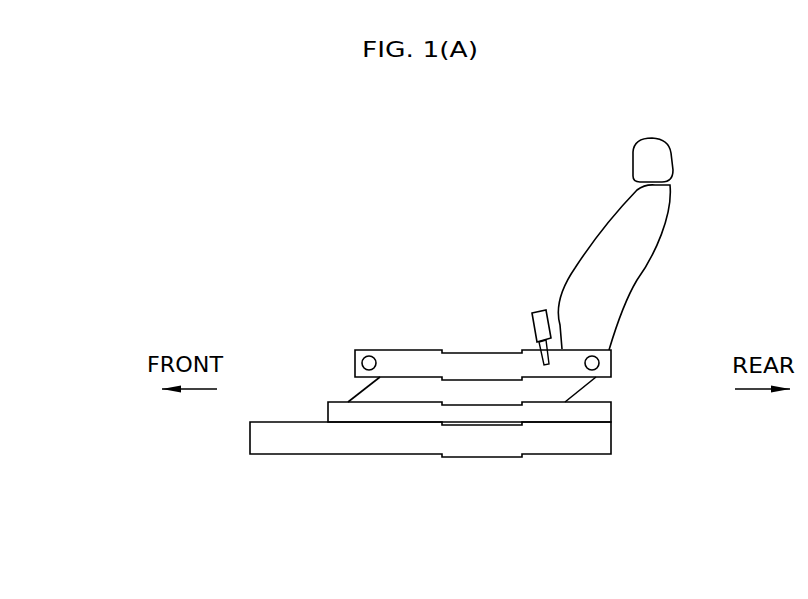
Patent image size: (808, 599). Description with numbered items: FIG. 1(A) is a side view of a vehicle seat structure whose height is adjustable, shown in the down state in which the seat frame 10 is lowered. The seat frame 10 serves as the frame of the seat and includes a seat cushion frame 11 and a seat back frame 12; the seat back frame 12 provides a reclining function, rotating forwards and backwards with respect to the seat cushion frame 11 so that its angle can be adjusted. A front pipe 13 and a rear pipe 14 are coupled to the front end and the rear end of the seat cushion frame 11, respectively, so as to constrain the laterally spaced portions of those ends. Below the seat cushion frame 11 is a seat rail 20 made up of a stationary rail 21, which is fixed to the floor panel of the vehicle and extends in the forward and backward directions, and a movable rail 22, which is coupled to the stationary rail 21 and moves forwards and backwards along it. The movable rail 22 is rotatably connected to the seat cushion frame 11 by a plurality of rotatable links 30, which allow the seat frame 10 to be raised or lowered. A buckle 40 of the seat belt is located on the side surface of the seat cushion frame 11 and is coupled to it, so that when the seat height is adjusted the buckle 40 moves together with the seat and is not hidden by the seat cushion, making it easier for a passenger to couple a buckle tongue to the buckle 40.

The seat frame 10 is at (652, 122).
The seat cushion frame 11 is at (463, 360).
The seat back frame 12 is at (634, 249).
The front pipe 13 is at (369, 355).
The rear pipe 14 is at (600, 363).
The seat rail 20 is at (430, 492).
The stationary rail 21 is at (463, 541).
The movable rail 22 is at (480, 413).
The rotatable links 30 is at (362, 388).
The buckle 40 is at (542, 310).